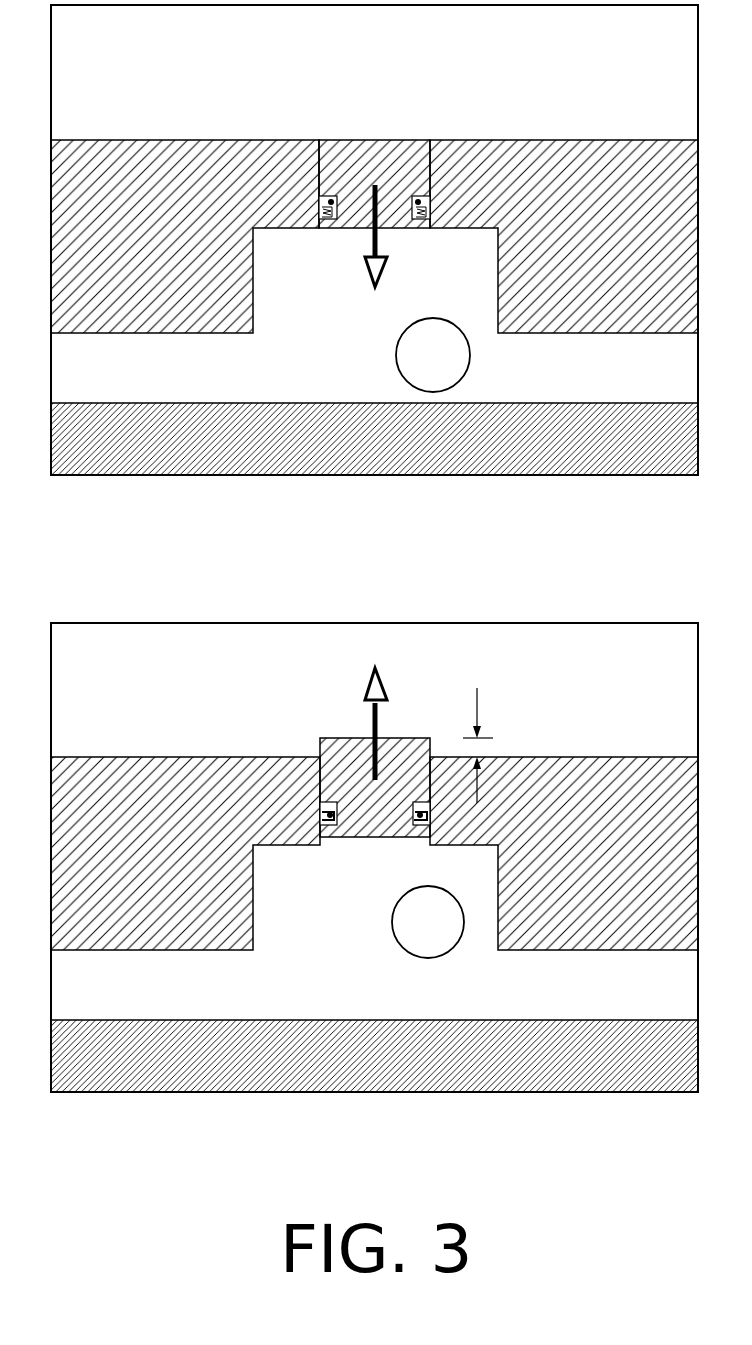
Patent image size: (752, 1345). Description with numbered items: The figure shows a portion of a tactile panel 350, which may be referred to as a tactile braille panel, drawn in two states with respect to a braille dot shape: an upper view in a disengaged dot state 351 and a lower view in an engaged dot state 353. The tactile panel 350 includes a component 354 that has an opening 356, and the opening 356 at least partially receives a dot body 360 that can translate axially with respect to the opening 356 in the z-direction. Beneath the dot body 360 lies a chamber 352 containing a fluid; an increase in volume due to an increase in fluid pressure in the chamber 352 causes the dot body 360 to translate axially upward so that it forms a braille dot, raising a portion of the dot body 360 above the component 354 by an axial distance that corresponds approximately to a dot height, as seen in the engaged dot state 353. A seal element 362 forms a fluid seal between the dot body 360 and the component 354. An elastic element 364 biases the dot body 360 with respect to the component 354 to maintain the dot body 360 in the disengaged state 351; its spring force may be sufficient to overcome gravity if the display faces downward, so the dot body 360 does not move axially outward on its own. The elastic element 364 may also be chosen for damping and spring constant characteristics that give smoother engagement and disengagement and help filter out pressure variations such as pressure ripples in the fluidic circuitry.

The tactile panel 350 is at (175, 64).
The disengaged dot state 351 is at (664, 46).
The chamber 352 is at (226, 384).
The engaged dot state 353 is at (666, 667).
The component 354 is at (157, 307).
The opening 356 is at (319, 230).
The dot body 360 is at (403, 140).
The seal element 362 is at (410, 200).
The elastic element 364 is at (415, 200).